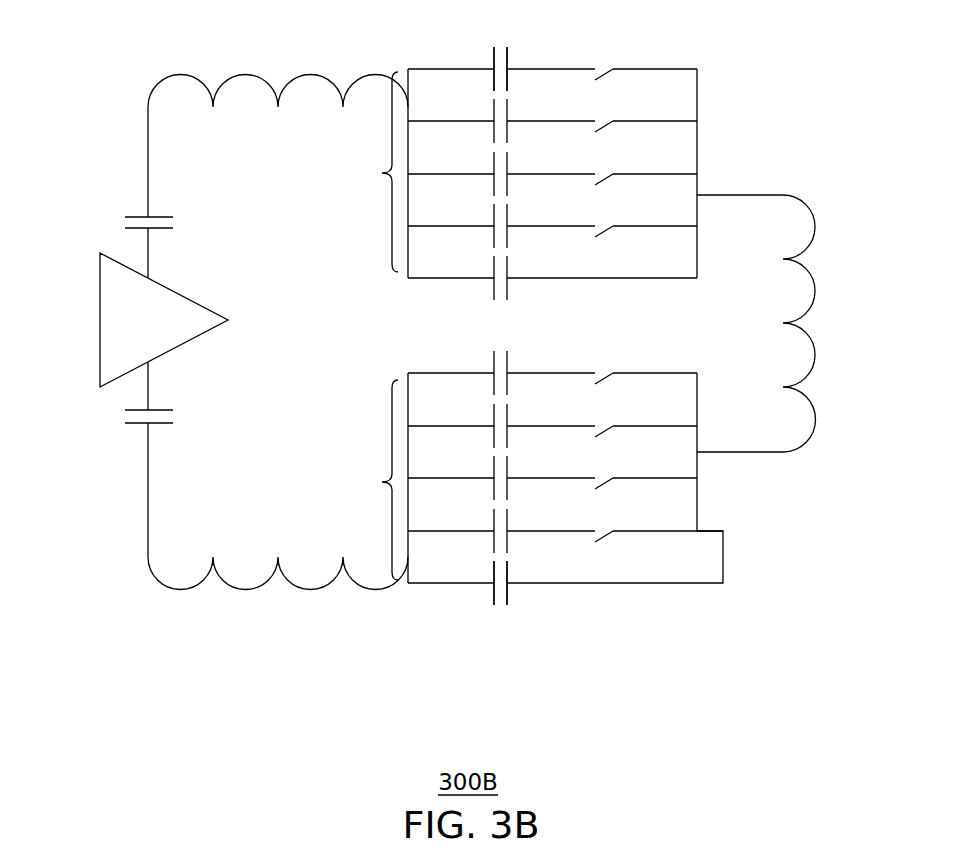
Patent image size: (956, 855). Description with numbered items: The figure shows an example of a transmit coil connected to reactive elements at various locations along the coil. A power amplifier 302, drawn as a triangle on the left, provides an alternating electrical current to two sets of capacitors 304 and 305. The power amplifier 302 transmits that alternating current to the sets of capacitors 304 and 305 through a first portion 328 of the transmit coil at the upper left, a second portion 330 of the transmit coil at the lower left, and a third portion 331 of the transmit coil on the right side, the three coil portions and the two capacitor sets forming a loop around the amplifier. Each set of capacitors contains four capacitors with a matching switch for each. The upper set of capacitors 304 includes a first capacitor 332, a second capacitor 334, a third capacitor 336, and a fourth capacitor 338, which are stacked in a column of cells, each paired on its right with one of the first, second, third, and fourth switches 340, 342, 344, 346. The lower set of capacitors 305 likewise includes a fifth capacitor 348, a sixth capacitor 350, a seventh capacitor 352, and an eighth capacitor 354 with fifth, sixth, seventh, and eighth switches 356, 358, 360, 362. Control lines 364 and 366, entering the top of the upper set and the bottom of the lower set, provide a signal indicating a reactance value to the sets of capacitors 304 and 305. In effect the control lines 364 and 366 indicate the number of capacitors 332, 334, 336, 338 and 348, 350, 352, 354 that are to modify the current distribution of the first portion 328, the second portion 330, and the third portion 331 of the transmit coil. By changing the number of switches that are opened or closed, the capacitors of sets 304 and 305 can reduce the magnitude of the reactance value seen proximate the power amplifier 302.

The power amplifier 302 is at (100, 280).
The set of capacitors 304 is at (512, 173).
The set of capacitors 305 is at (527, 478).
The first portion of the transmit coil 328 is at (247, 68).
The second portion of the transmit coil 330 is at (245, 588).
The third portion of the transmit coil 331 is at (815, 228).
The capacitor C0 332 is at (415, 275).
The capacitor C1 334 is at (415, 223).
The capacitor C2 336 is at (415, 171).
The capacitor C3 338 is at (415, 119).
The switch B0 340 is at (538, 269).
The switch B1 342 is at (538, 217).
The switch B2 344 is at (538, 164).
The switch B3 346 is at (538, 112).
The capacitor C4 348 is at (420, 578).
The capacitor C5 350 is at (420, 526).
The capacitor C6 352 is at (420, 474).
The capacitor C7 354 is at (420, 422).
The switch B4 356 is at (535, 525).
The switch B5 358 is at (535, 472).
The switch B6 360 is at (535, 420).
The switch B7 362 is at (535, 367).
The control line 364 is at (498, 43).
The control line 366 is at (507, 597).